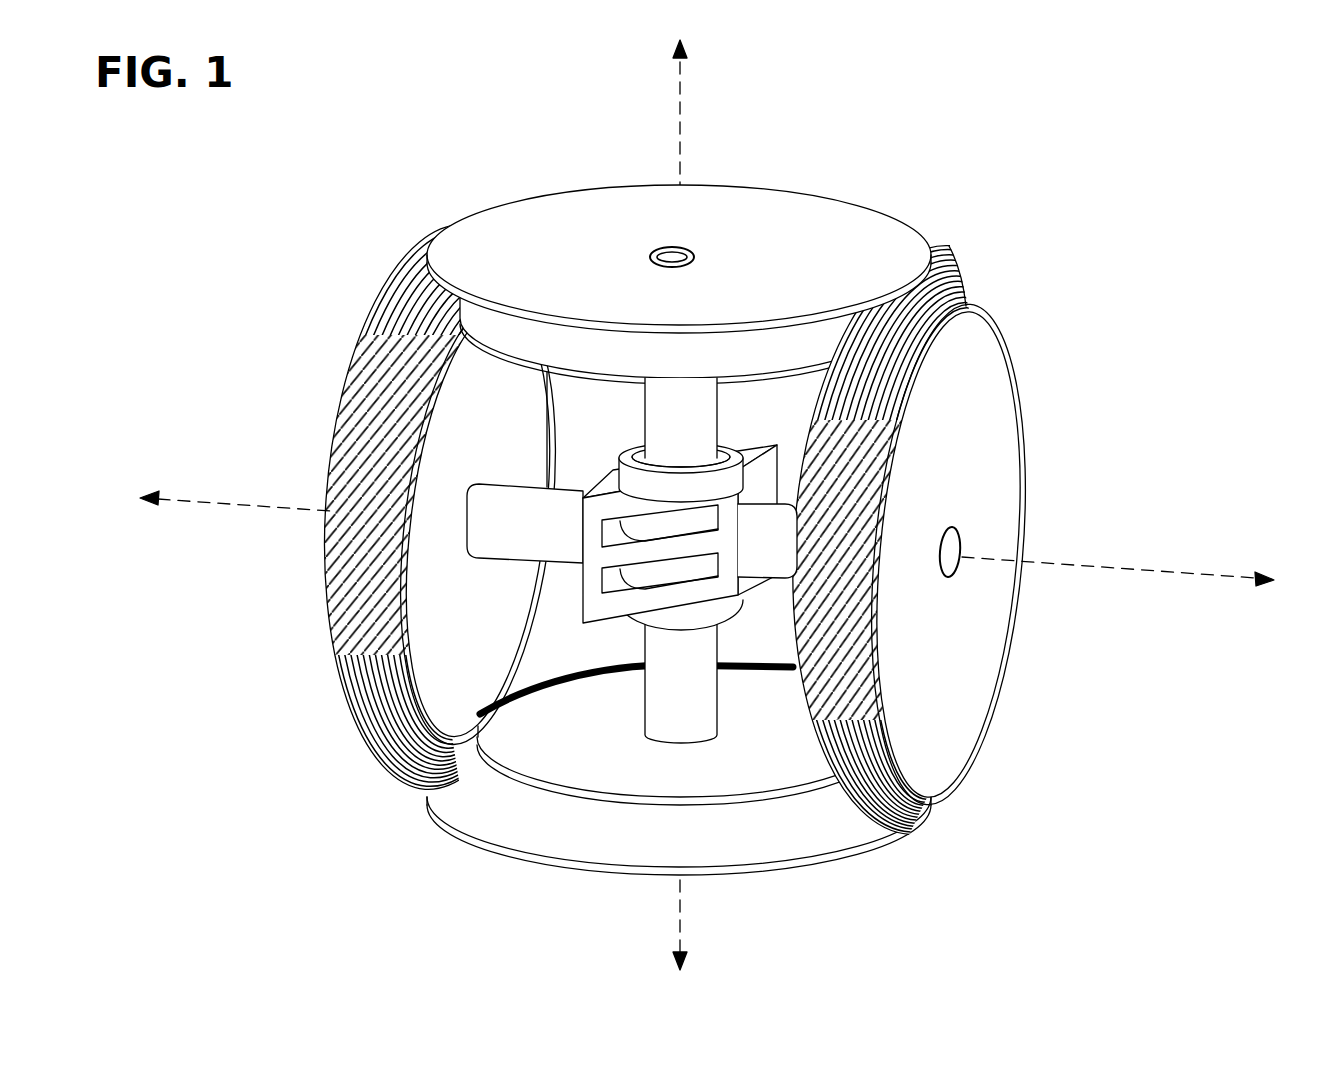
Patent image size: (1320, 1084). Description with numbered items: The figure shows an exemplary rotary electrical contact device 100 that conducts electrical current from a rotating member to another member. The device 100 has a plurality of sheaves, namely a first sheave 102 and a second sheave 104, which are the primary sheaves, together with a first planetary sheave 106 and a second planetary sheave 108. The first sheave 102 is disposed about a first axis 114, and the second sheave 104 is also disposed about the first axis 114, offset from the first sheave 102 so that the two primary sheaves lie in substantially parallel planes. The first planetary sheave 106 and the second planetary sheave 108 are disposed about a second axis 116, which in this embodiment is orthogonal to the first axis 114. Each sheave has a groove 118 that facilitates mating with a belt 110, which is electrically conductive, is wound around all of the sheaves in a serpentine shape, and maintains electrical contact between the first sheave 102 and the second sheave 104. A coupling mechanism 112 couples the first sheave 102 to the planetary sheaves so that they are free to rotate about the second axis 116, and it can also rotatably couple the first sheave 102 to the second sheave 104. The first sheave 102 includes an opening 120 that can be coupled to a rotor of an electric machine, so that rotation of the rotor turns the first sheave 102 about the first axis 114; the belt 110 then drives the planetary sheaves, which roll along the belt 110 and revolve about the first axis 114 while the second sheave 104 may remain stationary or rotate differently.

The rotary electrical contact device 100 is at (1046, 78).
The first sheave 102 is at (866, 222).
The second sheave 104 is at (752, 874).
The first planetary sheave 106 is at (447, 486).
The second planetary sheave 108 is at (1004, 520).
The belt 110 is at (956, 268).
The coupling mechanism 112 is at (630, 626).
The first axis 114 is at (684, 75).
The second axis 116 is at (1234, 572).
The groove 118 is at (578, 847).
The opening 120 is at (690, 254).